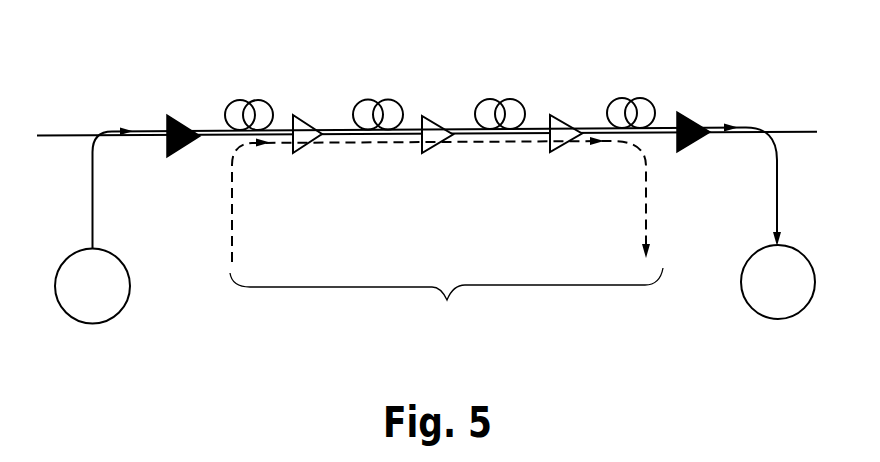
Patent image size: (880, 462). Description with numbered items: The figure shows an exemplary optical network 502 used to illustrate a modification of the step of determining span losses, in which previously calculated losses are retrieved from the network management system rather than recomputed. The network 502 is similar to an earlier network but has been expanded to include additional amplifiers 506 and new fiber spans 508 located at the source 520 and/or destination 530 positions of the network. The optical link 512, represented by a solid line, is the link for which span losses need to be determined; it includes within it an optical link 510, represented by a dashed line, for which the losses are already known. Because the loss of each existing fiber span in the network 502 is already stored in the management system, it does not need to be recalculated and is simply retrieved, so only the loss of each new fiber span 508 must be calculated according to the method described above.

The optical network 502 is at (447, 300).
The amplifier 506 is at (182, 116).
The fiber span 508 is at (242, 97).
The optical link 510 is at (232, 240).
The optical link 512 is at (93, 188).
The source 520 is at (128, 297).
The destination 530 is at (743, 297).